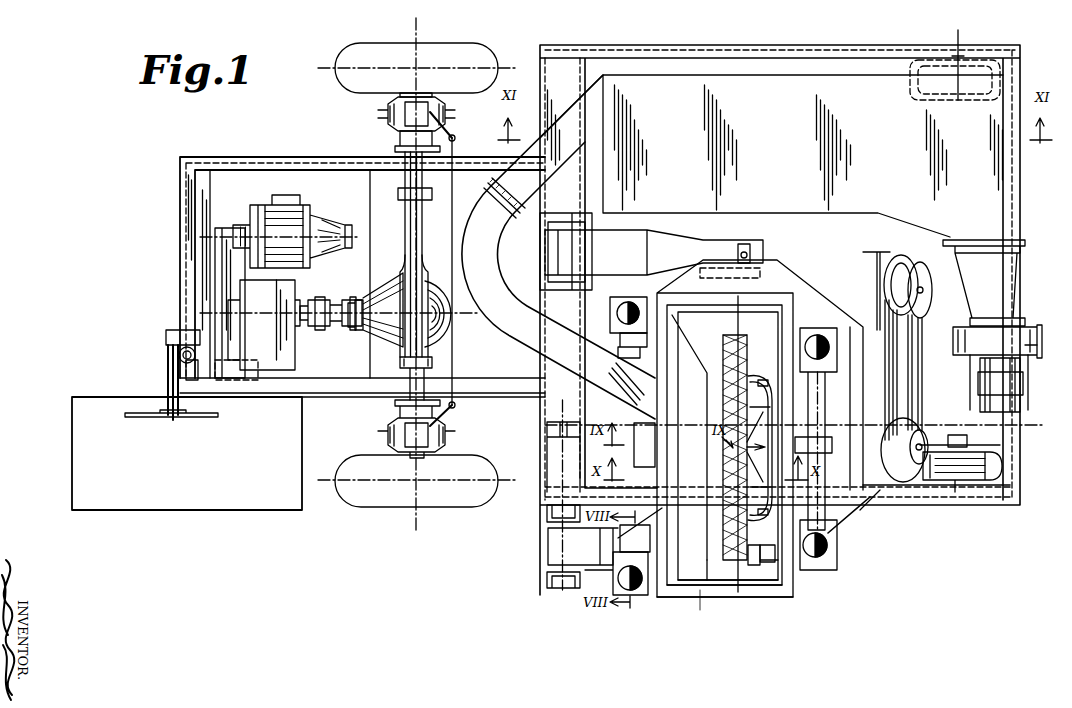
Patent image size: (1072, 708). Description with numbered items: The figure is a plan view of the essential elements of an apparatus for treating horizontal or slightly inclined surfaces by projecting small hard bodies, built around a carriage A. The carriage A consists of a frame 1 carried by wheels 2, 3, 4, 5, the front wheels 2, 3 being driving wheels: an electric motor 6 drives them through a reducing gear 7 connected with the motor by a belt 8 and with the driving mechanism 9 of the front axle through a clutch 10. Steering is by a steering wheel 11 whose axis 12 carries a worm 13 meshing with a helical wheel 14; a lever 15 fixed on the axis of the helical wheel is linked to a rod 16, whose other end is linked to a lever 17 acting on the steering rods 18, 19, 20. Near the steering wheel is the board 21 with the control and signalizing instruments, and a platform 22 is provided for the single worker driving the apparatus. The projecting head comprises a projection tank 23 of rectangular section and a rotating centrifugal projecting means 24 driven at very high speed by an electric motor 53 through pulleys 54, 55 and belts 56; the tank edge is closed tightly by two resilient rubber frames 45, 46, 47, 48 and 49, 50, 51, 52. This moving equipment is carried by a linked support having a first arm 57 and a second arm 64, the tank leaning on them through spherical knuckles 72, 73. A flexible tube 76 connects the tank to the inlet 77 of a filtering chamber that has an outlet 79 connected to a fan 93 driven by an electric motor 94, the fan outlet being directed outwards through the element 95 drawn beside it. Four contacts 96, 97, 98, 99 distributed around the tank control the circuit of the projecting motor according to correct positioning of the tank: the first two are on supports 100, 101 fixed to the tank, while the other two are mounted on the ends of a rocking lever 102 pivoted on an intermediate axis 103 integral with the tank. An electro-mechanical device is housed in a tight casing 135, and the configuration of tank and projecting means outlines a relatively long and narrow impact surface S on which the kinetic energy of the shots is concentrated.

The carriage A is at (210, 178).
The frame 1 is at (253, 157).
The front wheel 2 is at (345, 53).
The front wheel 3 is at (362, 500).
The rear wheel 4 is at (1002, 68).
The rear wheel 5 is at (1003, 463).
The electric motor 6 is at (268, 216).
The reducing gear 7 is at (290, 296).
The belt 8 is at (215, 255).
The driving mechanism 9 is at (382, 342).
The clutch 10 is at (325, 335).
The steering wheel 11 is at (128, 418).
The axis 12 is at (167, 378).
The worm 13 is at (164, 356).
The helical wheel 14 is at (182, 352).
The lever 15 is at (193, 372).
The rod 16 is at (368, 390).
The lever 17 is at (447, 431).
The steering rod 18 is at (452, 412).
The steering rod 19 is at (460, 362).
The steering rod 20 is at (445, 135).
The board 21 is at (260, 364).
The platform 22 is at (140, 502).
The projection tank 23 is at (704, 582).
The centrifugal projecting means 24 is at (759, 463).
The resilient frame 45 is at (657, 590).
The resilient frame 46 is at (737, 594).
The resilient frame 47 is at (788, 592).
The resilient frame 48 is at (719, 294).
The resilient frame 49 is at (690, 585).
The resilient frame 50 is at (718, 598).
The resilient frame 51 is at (783, 572).
The resilient frame 52 is at (750, 300).
The electric motor 53 is at (904, 256).
The pulley 54 is at (923, 286).
The pulley 55 is at (918, 472).
The belt 56 is at (924, 391).
The first arm 57 is at (546, 565).
The second arm 64 is at (662, 240).
The spherical knuckle 72 is at (763, 580).
The spherical knuckle 73 is at (743, 249).
The flexible tube 76 is at (527, 345).
The inlet 77 is at (522, 165).
The outlet 79 is at (1012, 259).
The fan 93 is at (1036, 350).
The electric motor 94 is at (1021, 402).
The pipe 95 is at (1040, 336).
The electric contact 96 is at (615, 309).
The electric contact 97 is at (600, 580).
The electric contact 98 is at (817, 335).
The electric contact 99 is at (840, 553).
The support 100 is at (622, 353).
The support 101 is at (560, 540).
The rocking lever 102 is at (850, 515).
The intermediate axis 103 is at (872, 500).
The tight casing 135 is at (645, 424).
The impact surface S is at (727, 517).